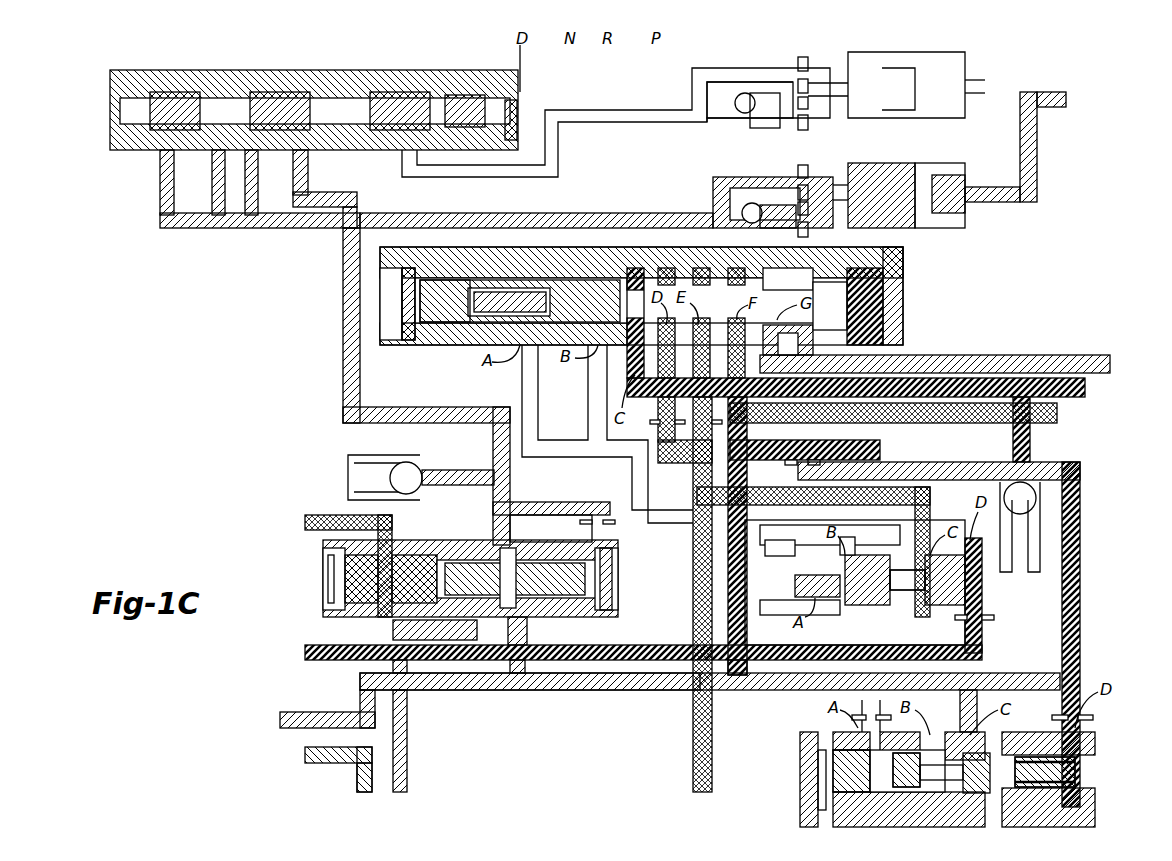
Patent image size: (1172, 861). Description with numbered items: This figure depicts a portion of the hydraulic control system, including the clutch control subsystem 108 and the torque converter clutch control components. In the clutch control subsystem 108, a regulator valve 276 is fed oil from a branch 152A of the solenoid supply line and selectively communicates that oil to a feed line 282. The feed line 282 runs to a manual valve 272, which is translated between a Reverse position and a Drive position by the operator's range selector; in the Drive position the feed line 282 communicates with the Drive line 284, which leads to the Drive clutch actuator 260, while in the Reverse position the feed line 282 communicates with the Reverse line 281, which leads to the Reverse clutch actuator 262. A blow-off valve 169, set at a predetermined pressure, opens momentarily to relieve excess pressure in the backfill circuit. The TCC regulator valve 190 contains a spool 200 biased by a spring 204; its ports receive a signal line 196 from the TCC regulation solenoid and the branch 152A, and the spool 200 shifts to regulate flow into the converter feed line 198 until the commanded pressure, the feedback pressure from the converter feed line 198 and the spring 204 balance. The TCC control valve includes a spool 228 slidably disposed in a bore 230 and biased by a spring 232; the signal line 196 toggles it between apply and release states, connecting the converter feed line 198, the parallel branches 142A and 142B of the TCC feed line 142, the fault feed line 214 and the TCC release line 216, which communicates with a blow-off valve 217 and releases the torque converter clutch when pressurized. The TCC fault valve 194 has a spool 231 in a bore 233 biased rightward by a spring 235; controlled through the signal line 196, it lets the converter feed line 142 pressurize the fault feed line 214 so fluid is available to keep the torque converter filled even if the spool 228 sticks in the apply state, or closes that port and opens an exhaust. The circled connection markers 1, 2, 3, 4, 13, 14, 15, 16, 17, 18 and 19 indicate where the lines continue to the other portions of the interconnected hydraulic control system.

The clutch control subsystem 108 is at (645, 76).
The manual valve 272 is at (232, 70).
The Reverse line 281 is at (653, 128).
The Drive line 284 is at (596, 213).
The Reverse clutch actuator 262 is at (884, 52).
The Drive clutch actuator 260 is at (930, 163).
The feed line 282 is at (343, 312).
The TCC feed line 142 is at (684, 278).
The parallel branch of the TCC feed line 142A is at (658, 450).
The parallel branch of the TCC feed line 142B is at (747, 460).
The spool 228 is at (500, 300).
The bore 230 is at (410, 340).
The spring 232 is at (468, 338).
The fault feed line 214 is at (560, 460).
The TCC release line 216 is at (990, 375).
The blow-off valve 217 is at (1062, 504).
The converter feed line 198 is at (1082, 565).
The TCC fault valve 194 is at (990, 592).
The spool 231 is at (872, 598).
The bore 233 is at (728, 556).
The spring 235 is at (770, 660).
The blow-off valve 169 is at (350, 468).
The regulator valve 276 is at (618, 589).
The signal line 196 is at (570, 660).
The branch of the solenoid supply line 152A is at (478, 690).
The TCC regulator valve 190 is at (1095, 754).
The spool 200 is at (912, 790).
The spring 204 is at (850, 755).
The port 1 is at (336, 564).
The port 2 is at (631, 652).
The port 3 is at (315, 711).
The port 4 is at (326, 768).
The port 13 is at (362, 788).
The port 14 is at (398, 752).
The port 15 is at (704, 605).
The port 16 is at (1026, 145).
The port 17 is at (948, 364).
The port 18 is at (869, 388).
The port 19 is at (905, 413).